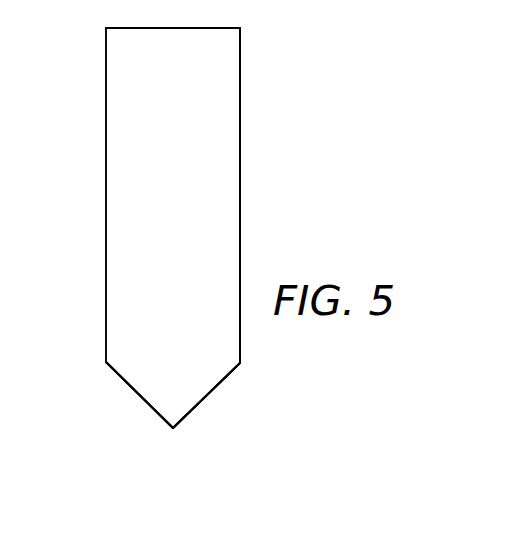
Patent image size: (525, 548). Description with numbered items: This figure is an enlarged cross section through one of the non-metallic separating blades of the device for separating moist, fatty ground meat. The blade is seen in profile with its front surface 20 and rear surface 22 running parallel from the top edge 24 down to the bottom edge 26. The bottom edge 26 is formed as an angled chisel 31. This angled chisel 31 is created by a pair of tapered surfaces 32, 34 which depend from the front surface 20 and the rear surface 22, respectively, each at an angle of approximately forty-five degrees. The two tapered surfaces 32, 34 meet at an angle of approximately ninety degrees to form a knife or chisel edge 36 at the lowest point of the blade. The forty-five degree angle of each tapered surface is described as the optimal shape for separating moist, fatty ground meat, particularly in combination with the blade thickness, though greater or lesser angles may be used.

The front surface 20 is at (106, 230).
The rear surface 22 is at (240, 128).
The top edge 24 is at (212, 28).
The bottom edge 26 is at (137, 394).
The angled chisel 31 is at (215, 389).
The tapered surface 32 is at (118, 378).
The tapered surface 34 is at (229, 376).
The chisel edge 36 is at (173, 428).